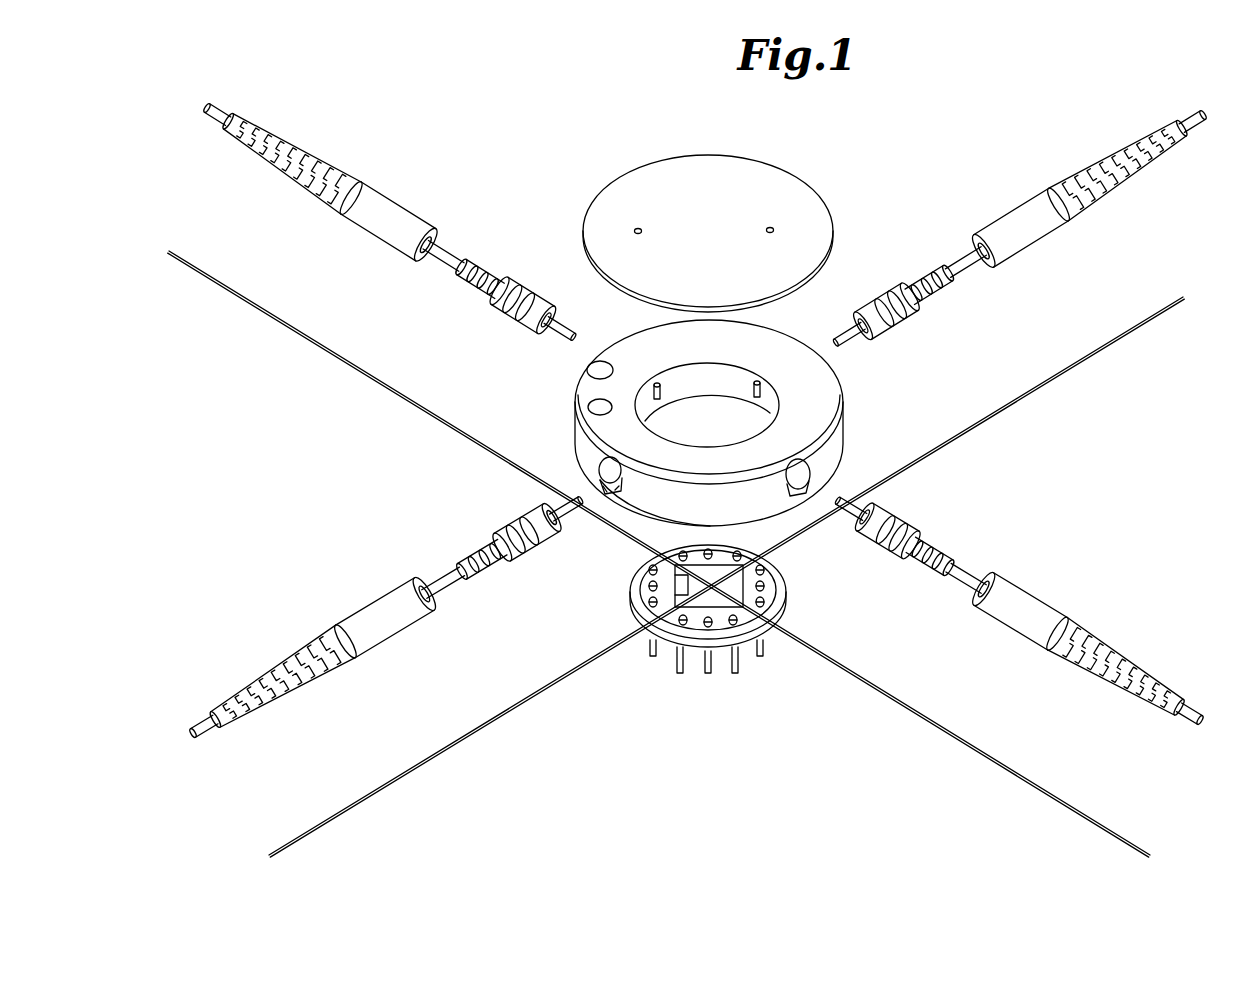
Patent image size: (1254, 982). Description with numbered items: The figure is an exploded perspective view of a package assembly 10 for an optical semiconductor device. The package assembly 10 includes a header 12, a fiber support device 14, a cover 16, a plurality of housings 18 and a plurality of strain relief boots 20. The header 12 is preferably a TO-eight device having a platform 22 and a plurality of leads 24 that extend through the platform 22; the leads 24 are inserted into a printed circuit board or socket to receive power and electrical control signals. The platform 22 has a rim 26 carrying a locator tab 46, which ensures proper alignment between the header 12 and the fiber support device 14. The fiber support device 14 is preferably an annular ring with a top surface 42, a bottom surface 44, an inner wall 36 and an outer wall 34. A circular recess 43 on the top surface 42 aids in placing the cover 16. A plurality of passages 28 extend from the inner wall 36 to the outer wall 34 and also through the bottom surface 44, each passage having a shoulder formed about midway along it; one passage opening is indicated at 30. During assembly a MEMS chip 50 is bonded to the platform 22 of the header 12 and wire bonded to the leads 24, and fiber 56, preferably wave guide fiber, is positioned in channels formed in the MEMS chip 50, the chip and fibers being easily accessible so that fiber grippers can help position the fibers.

The package assembly 10 is at (574, 190).
The header 12 is at (729, 623).
The fiber support device 14 is at (710, 437).
The cover 16 is at (816, 196).
The housings 18 is at (386, 616).
The strain relief boots 20 is at (376, 655).
The platform 22 is at (688, 634).
The leads 24 is at (746, 667).
The rim 26 is at (796, 589).
The passages 28 is at (804, 472).
The slot opening 30 is at (611, 500).
The outer wall 34 is at (578, 450).
The inner wall 36 is at (705, 376).
The top surface 42 is at (662, 363).
The circular recess 43 is at (588, 364).
The bottom surface 44 is at (688, 529).
The locator tab 46 is at (646, 573).
The MEMS chip 50 is at (730, 583).
The fiber 56 is at (928, 461).